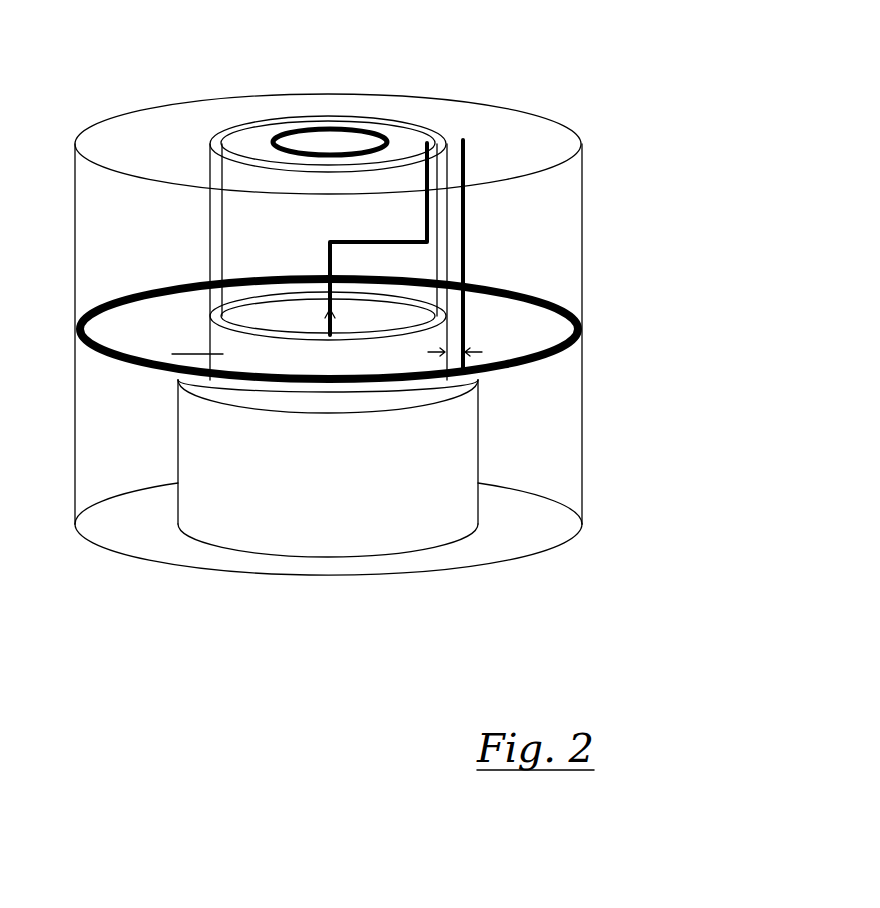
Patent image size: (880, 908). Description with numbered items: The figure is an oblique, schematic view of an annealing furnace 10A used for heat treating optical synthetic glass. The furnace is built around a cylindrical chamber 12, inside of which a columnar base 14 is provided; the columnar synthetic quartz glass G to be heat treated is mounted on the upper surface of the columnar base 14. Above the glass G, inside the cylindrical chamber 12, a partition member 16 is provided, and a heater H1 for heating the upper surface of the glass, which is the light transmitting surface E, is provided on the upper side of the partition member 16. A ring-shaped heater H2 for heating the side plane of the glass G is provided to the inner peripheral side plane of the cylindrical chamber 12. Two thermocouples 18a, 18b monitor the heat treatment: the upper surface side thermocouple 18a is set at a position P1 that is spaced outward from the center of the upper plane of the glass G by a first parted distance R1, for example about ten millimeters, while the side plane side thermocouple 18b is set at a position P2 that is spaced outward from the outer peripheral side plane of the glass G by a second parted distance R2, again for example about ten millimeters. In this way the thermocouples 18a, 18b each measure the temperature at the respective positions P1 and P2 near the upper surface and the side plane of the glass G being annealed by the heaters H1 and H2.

The annealing furnace 10A is at (632, 160).
The cylindrical chamber 12 is at (558, 425).
The columnar base 14 is at (316, 535).
The partition member 16 is at (236, 155).
The upper surface side thermocouple 18a is at (430, 140).
The side plane side thermocouple 18b is at (465, 168).
The heater for heating the upper surface H1 is at (385, 135).
The ring-shaped heater for heating the side plane H2 is at (582, 331).
The columnar synthetic quartz glass G is at (175, 360).
The temperature measuring position P1 is at (327, 312).
The temperature measuring position P2 is at (489, 375).
The light transmitting surface E is at (374, 342).
The first parted distance R1 is at (336, 319).
The second parted distance R2 is at (466, 350).